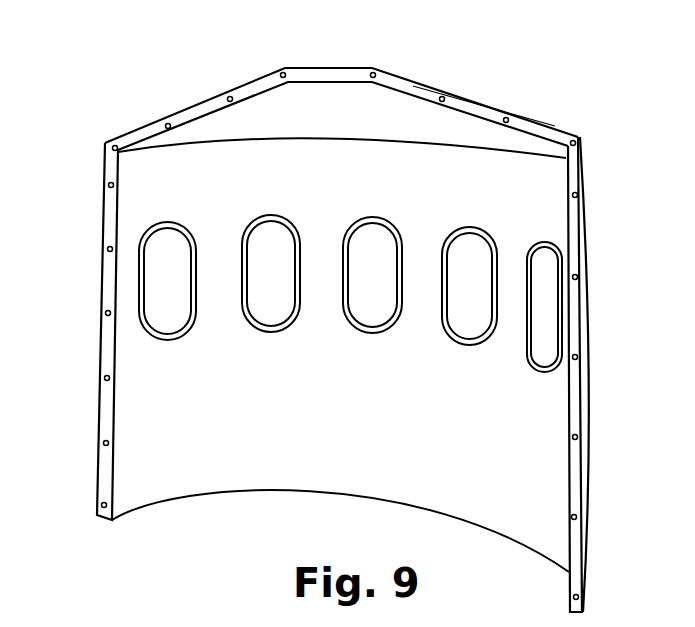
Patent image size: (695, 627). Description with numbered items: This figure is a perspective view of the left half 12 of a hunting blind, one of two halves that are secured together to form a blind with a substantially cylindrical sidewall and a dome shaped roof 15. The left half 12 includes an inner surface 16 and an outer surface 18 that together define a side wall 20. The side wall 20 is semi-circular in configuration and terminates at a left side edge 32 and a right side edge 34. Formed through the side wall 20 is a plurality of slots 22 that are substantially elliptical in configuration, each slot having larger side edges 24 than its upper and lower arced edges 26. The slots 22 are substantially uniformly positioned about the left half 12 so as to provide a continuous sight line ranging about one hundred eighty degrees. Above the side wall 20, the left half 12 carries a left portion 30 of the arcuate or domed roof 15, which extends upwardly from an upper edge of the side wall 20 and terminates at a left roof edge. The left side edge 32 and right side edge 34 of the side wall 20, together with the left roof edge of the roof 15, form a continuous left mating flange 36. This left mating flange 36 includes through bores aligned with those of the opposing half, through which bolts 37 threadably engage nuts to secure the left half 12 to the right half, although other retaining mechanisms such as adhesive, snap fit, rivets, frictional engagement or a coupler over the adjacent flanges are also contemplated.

The left half 12 is at (213, 478).
The dome shaped roof 15 is at (318, 56).
The inner surface 16 is at (342, 409).
The outer surface 18 is at (588, 282).
The side wall 20 is at (484, 466).
The slots 22 is at (170, 262).
The side edges 24 is at (250, 268).
The upper and lower arced edges 26 is at (287, 228).
The left portion of the roof 30 is at (445, 120).
The left side edge 32 is at (105, 420).
The right side edge 34 is at (577, 412).
The left mating flange 36 is at (250, 88).
The bolts 37 is at (577, 138).